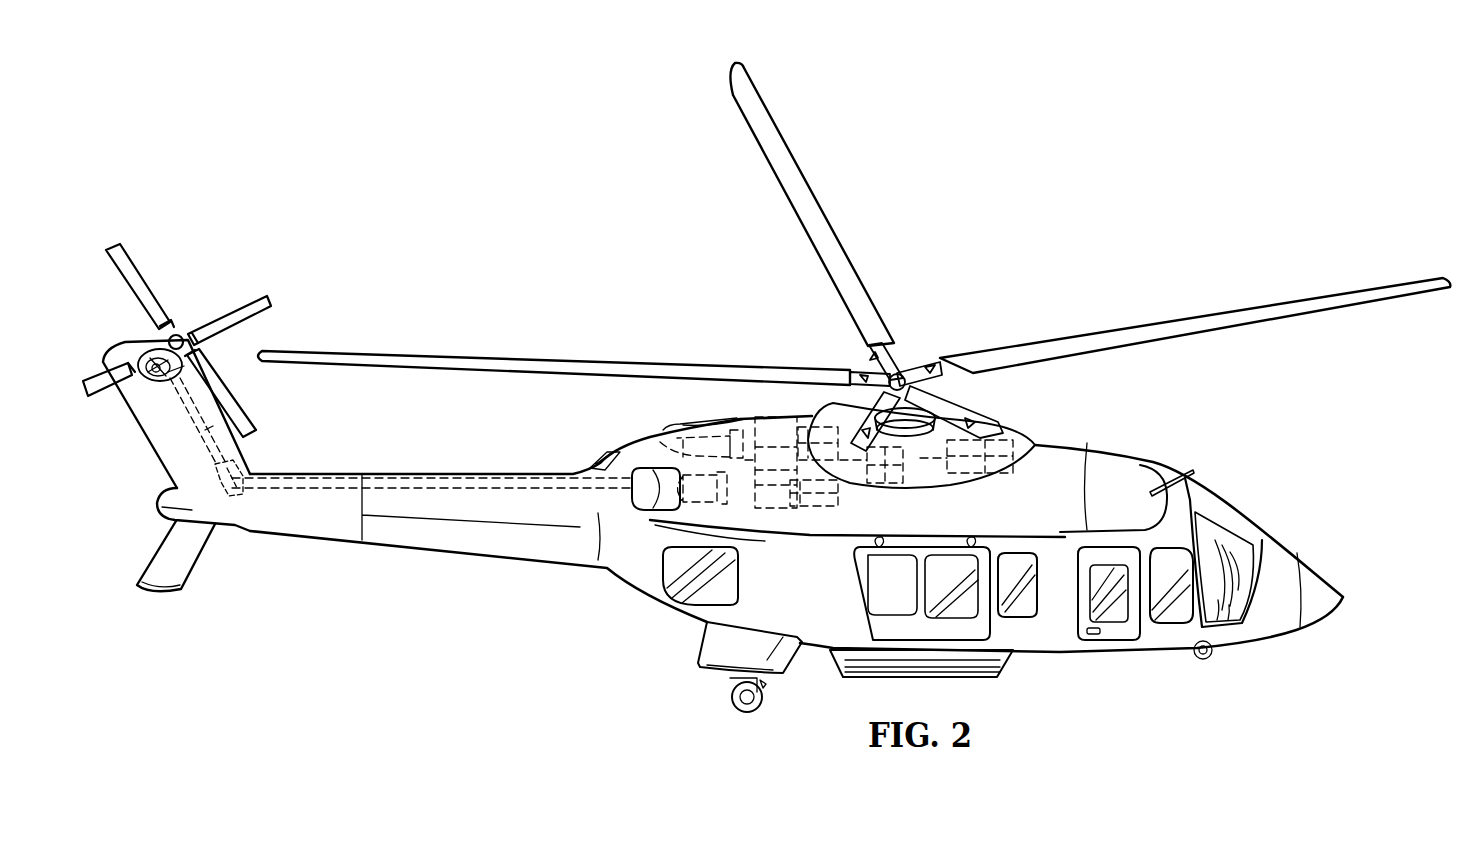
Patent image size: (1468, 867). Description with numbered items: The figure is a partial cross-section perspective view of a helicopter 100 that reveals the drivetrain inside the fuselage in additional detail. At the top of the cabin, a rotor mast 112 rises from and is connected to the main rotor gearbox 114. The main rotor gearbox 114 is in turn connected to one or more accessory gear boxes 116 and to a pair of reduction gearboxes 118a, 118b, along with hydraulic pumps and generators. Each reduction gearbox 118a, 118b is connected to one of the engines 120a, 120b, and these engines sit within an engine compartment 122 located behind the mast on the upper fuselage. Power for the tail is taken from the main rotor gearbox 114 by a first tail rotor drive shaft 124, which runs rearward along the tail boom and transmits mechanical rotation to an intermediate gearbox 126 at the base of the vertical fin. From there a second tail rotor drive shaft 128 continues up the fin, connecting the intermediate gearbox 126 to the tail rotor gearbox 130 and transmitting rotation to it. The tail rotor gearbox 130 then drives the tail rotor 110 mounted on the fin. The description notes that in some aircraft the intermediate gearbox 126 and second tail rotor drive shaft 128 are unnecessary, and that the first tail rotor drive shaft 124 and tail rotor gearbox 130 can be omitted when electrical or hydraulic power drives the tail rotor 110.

The helicopter 100 is at (1131, 112).
The tail rotor 110 is at (138, 275).
The rotor mast 112 is at (867, 478).
The main rotor gearbox 114 is at (908, 478).
The accessory gear box 116 is at (990, 470).
The reduction gearbox 118a is at (812, 510).
The reduction gearbox 118b is at (808, 420).
The engine 120a is at (750, 495).
The engine 120b is at (760, 420).
The engine compartment 122 is at (787, 418).
The first tail rotor drive shaft 124 is at (450, 477).
The intermediate gearbox 126 is at (235, 505).
The second tail rotor drive shaft 128 is at (215, 420).
The tail rotor gearbox 130 is at (145, 340).